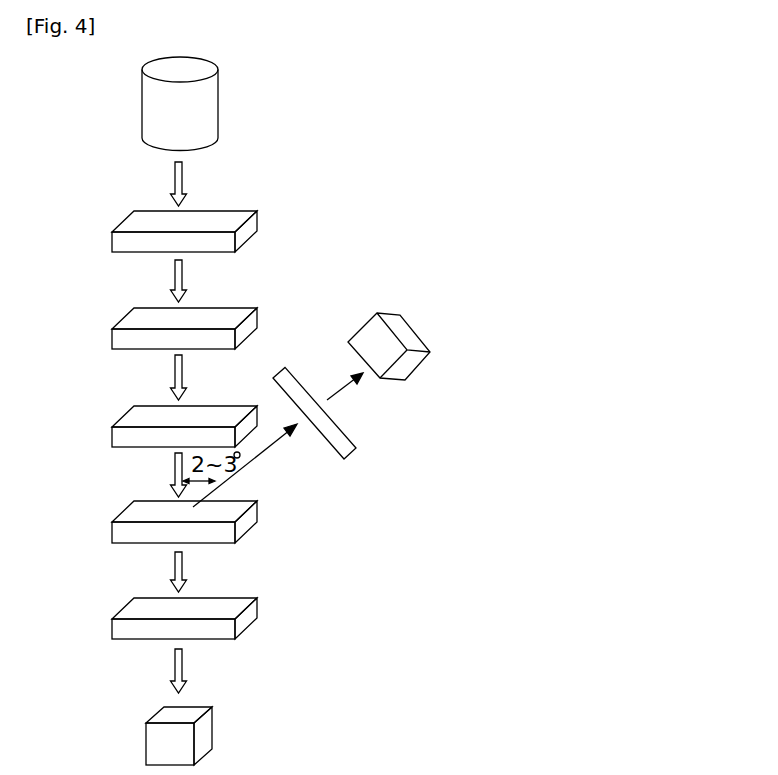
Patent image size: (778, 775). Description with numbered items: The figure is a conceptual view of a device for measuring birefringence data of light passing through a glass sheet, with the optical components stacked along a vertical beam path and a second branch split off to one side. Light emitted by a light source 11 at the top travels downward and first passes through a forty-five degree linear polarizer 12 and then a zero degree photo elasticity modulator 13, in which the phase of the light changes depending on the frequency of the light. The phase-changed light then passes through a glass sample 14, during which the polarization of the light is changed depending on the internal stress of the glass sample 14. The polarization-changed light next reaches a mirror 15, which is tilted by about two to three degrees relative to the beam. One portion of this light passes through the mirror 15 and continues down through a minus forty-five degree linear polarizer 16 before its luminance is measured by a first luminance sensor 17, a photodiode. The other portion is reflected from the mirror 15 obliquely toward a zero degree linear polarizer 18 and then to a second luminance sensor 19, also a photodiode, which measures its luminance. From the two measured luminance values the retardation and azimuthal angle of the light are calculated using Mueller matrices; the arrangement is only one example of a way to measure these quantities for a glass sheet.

The light source 11 is at (153, 109).
The 45° linear polarizer 12 is at (116, 239).
The 0° photo elasticity modulator 13 is at (120, 339).
The glass sample 14 is at (117, 434).
The mirror 15 is at (118, 531).
The −45° linear polarizer 16 is at (117, 628).
The first luminance sensor 17 is at (150, 741).
The 0° linear polarizer 18 is at (348, 447).
The second luminance sensor 19 is at (407, 368).